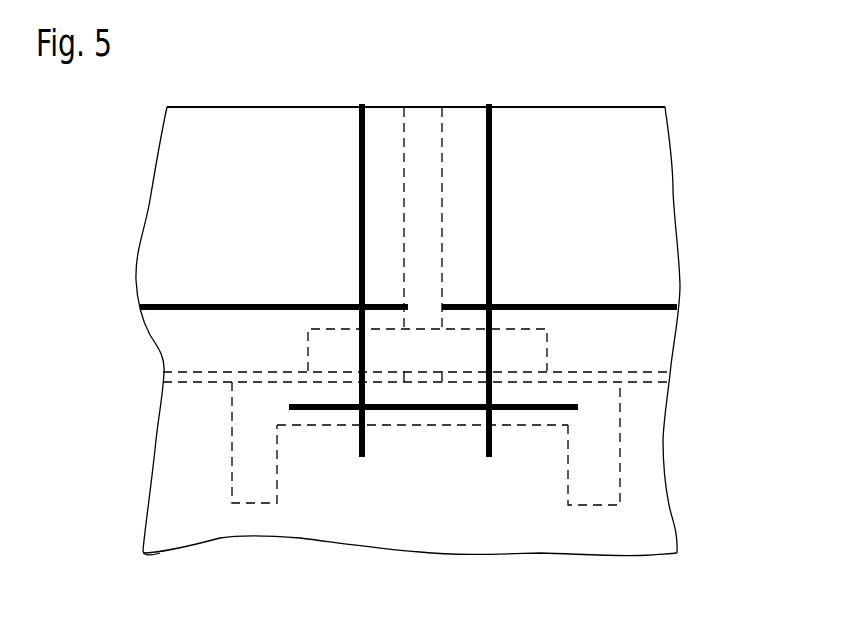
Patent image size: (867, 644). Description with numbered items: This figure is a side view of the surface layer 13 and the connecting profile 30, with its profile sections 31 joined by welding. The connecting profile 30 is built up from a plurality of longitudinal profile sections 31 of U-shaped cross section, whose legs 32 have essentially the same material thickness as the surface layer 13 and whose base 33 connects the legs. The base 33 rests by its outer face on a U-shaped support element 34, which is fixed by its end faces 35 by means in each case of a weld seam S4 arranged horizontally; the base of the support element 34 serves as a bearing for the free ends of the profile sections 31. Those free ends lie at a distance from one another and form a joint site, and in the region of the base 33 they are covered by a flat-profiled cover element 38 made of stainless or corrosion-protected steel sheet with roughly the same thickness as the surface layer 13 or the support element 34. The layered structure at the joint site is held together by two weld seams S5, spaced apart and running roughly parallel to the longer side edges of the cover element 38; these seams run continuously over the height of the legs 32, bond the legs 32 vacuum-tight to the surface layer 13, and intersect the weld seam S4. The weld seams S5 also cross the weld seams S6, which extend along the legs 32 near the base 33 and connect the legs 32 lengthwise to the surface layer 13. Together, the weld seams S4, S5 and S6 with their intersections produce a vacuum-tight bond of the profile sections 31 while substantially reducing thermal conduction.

The surface layer 13 is at (649, 532).
The connecting profile 30 is at (280, 92).
The profile section 31 is at (202, 181).
The leg 32 is at (622, 139).
The base 33 is at (672, 382).
The support element 34 is at (427, 422).
The end face 35 is at (532, 420).
The cover element 38 is at (523, 355).
The weld seam S4 is at (323, 410).
The weld seam S5 is at (367, 121).
The weld seam S6 is at (186, 304).